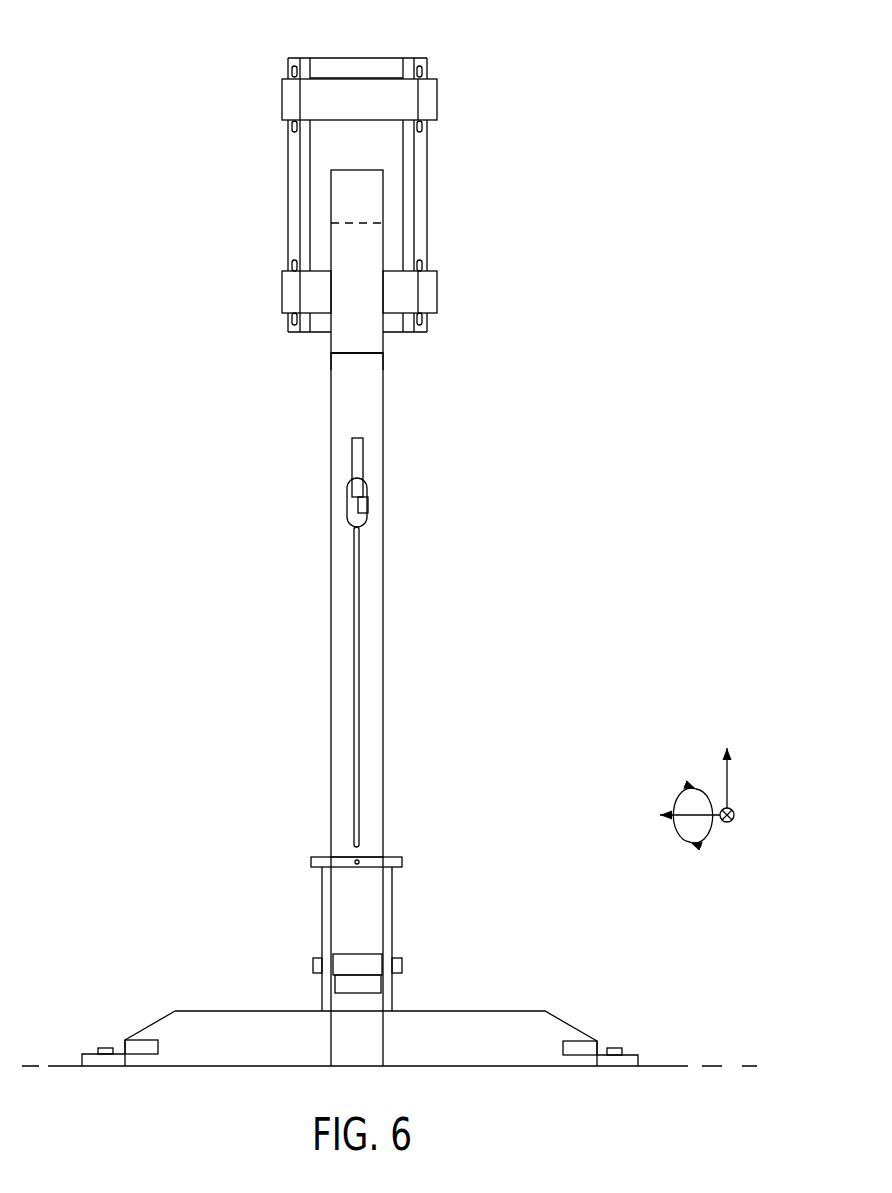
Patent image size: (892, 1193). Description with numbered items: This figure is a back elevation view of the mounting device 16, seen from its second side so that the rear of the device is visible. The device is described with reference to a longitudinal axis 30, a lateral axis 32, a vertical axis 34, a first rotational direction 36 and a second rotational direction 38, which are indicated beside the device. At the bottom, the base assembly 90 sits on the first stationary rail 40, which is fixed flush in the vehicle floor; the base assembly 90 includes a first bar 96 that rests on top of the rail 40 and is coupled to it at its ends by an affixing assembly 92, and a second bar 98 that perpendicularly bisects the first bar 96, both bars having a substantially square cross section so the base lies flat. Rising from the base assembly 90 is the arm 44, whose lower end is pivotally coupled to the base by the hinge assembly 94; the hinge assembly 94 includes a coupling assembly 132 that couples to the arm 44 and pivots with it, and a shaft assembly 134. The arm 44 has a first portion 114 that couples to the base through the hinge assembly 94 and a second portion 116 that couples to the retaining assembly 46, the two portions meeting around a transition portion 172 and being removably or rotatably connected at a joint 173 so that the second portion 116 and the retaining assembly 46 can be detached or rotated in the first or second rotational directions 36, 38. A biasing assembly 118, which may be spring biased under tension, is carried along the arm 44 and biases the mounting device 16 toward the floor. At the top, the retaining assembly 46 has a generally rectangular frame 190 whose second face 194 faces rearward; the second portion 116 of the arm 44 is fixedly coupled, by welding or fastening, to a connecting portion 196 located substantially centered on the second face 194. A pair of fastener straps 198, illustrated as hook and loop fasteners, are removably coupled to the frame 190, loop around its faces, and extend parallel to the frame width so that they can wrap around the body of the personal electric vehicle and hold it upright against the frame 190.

The mounting device 16 is at (175, 47).
The retaining assembly 46 is at (530, 62).
The frame 190 is at (360, 58).
The second face 194 is at (338, 155).
The fastener straps 198 is at (437, 100).
The arm 44 is at (422, 553).
The connecting portion 196 is at (362, 198).
The second portion 116 is at (367, 252).
The transition portion 172 is at (320, 349).
The joint 173 is at (320, 365).
The first portion 114 is at (365, 417).
The biasing assembly 118 is at (320, 551).
The hinge assembly 94 is at (435, 895).
The coupling assembly 132 is at (328, 910).
The shaft assembly 134 is at (300, 964).
The base assembly 90 is at (588, 995).
The first bar 96 is at (210, 1051).
The affixing assembly 92 is at (88, 1042).
The second bar 98 is at (358, 1050).
The first stationary rail 40 is at (712, 1066).
The longitudinal axis 30 is at (676, 812).
The lateral axis 32 is at (729, 825).
The vertical axis 34 is at (728, 767).
The first rotational direction 36 is at (690, 833).
The second rotational direction 38 is at (700, 798).